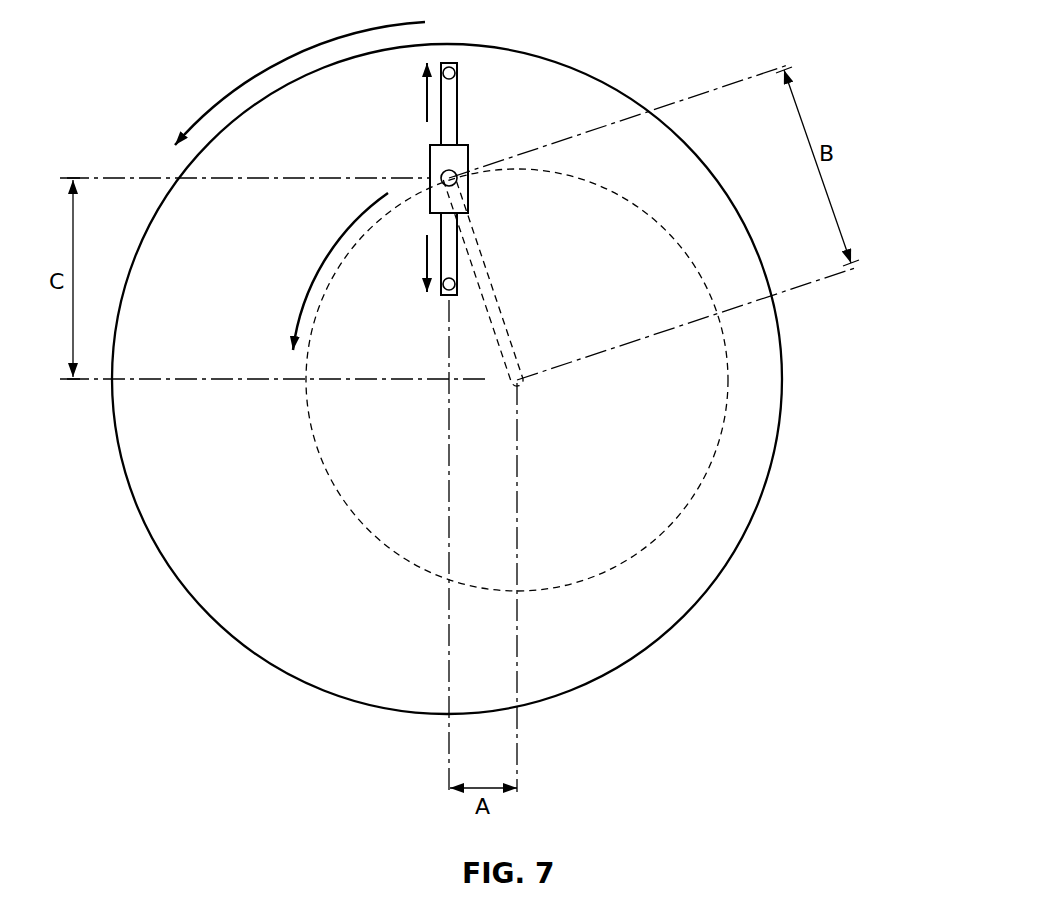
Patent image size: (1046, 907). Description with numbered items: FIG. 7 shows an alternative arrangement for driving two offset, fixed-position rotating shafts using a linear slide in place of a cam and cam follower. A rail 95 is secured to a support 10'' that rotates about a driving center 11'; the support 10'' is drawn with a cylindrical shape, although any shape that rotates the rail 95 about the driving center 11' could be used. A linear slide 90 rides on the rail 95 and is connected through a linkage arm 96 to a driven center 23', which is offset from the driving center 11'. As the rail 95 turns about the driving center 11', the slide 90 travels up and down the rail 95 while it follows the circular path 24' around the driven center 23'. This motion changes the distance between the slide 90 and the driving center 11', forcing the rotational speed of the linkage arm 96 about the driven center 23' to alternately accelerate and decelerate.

The support 10'' is at (411, 379).
The path 24' is at (487, 380).
The driving center 11' is at (427, 428).
The driven center 23' is at (686, 530).
The linear slide 90 is at (464, 141).
The rail 95 is at (462, 86).
The linkage arm 96 is at (495, 290).